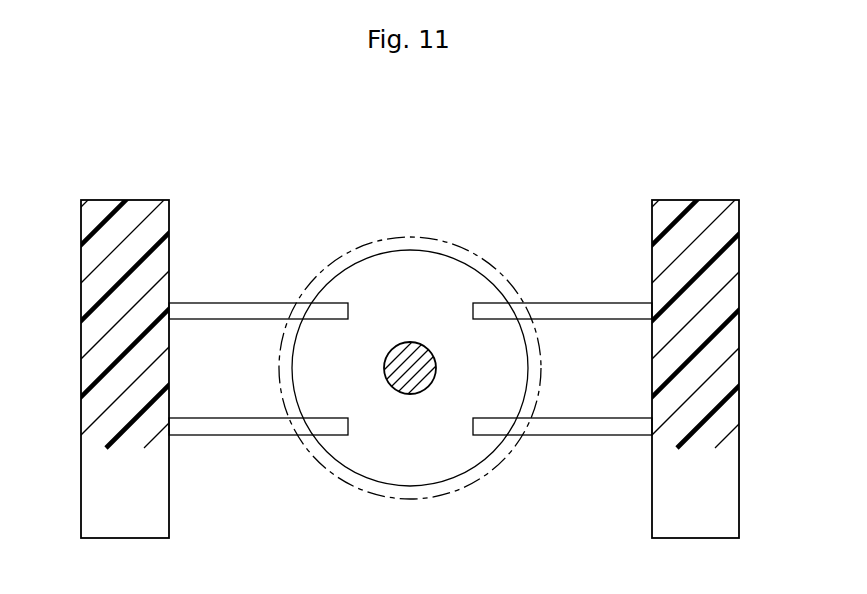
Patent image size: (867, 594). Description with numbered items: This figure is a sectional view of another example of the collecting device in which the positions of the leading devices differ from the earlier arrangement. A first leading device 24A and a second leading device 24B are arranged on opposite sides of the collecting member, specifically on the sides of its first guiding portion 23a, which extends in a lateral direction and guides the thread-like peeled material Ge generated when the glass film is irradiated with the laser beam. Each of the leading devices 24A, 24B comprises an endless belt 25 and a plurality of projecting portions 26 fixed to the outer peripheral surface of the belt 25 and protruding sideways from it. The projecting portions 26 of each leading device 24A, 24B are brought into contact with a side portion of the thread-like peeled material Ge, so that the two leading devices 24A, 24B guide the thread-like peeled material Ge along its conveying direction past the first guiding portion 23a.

The first leading device 24A is at (694, 180).
The second leading device 24B is at (128, 180).
The endless belt 25 is at (95, 297).
The projecting portions 26 is at (237, 303).
The thread-like peeled material Ge is at (453, 245).
The first guiding portion 23a is at (404, 394).